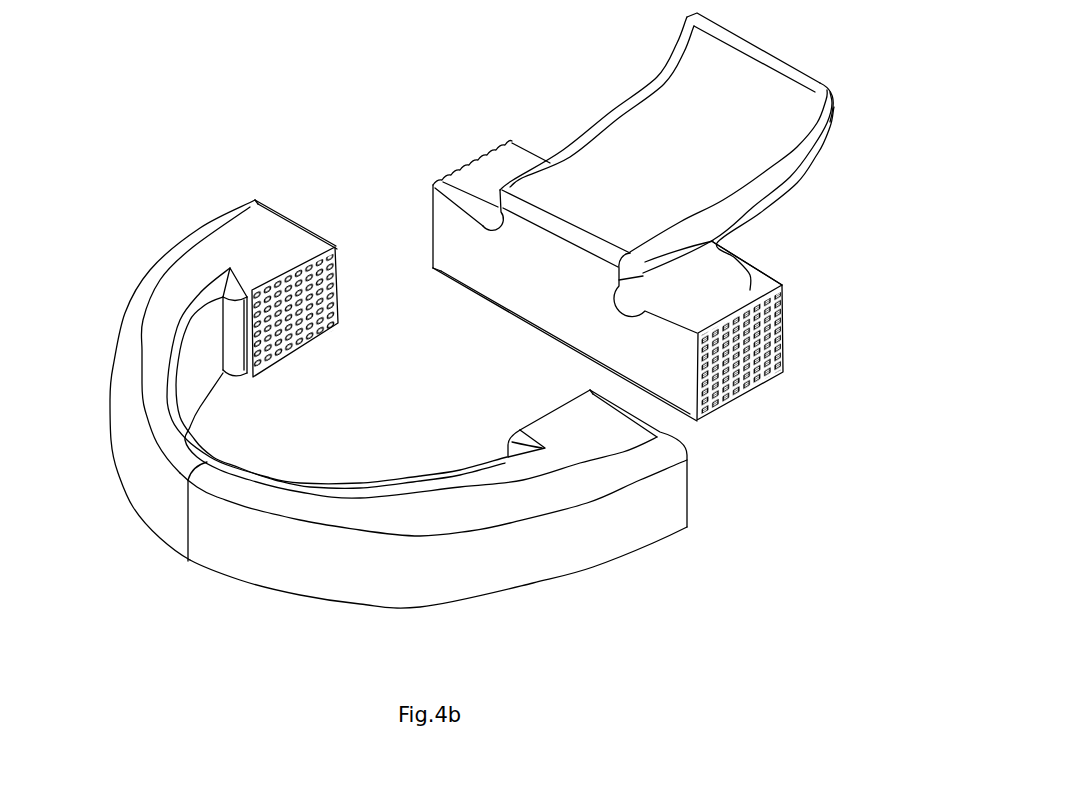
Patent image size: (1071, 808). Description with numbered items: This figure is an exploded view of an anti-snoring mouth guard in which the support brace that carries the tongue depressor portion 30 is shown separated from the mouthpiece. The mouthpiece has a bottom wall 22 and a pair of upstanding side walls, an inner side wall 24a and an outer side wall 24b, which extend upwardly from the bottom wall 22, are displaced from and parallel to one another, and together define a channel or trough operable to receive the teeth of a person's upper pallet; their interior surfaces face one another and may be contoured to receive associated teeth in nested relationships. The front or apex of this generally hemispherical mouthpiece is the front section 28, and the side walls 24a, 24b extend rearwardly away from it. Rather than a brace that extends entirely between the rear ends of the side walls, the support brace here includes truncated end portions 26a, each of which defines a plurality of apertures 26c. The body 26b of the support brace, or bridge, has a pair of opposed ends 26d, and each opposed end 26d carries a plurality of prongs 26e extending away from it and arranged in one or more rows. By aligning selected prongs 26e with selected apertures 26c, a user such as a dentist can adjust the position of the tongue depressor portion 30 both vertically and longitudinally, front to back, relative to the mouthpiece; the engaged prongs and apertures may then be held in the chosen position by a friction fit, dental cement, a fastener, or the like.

The bottom wall 22 is at (353, 409).
The inner side wall 24a is at (207, 375).
The outer side wall 24b is at (348, 583).
The truncated end portions 26a is at (292, 245).
The body 26b is at (632, 267).
The apertures 26c is at (300, 330).
The opposed ends 26d is at (510, 160).
The prongs 26e is at (752, 377).
The front section 28 is at (162, 530).
The tongue depressor portion 30 is at (674, 239).